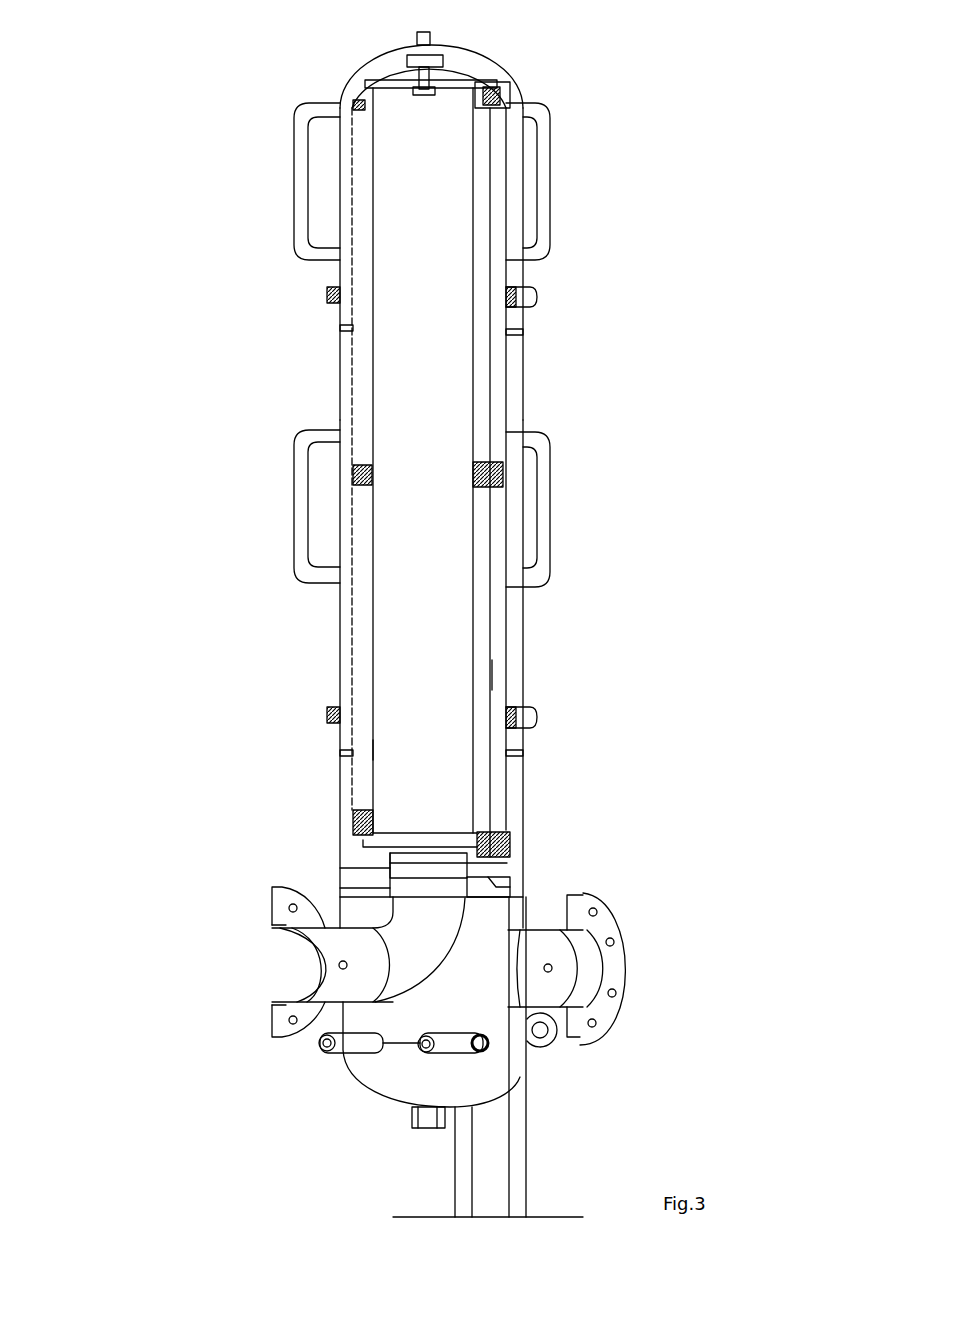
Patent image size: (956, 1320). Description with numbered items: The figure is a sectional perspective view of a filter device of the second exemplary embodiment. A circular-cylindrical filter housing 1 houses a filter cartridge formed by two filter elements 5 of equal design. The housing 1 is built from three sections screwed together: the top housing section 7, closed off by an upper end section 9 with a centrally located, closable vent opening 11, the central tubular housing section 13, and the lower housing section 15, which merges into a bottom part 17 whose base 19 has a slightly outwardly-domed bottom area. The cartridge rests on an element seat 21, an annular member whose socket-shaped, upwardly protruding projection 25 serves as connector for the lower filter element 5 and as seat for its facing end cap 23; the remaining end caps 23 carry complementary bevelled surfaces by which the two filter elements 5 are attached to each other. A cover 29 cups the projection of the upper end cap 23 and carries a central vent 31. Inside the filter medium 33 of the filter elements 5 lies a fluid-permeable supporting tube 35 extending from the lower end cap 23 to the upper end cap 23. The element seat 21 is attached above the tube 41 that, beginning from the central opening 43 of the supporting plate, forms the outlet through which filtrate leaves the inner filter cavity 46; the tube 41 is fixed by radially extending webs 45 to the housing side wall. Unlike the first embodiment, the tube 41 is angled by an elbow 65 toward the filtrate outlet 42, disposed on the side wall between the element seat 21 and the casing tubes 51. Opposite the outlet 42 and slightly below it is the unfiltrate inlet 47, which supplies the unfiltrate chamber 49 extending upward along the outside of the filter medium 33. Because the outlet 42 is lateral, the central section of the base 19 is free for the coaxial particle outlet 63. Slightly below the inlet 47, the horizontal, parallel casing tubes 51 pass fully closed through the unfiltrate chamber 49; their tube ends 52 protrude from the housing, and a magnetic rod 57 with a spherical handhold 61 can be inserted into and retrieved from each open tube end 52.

The filter housing 1 is at (255, 423).
The filter element 5 is at (352, 198).
The top housing section 7 is at (513, 220).
The upper end section 9 is at (365, 53).
The vent opening 11 is at (433, 33).
The central tubular housing section 13 is at (513, 610).
The lower housing section 15 is at (523, 832).
The bottom part 17 is at (533, 1073).
The base 19 is at (377, 1097).
The element seat 21 is at (400, 843).
The end cap 23 is at (510, 95).
The projection 25 is at (497, 90).
The cover 29 is at (500, 56).
The vent 31 is at (440, 62).
The filter medium 33 is at (482, 405).
The supporting tube 35 is at (378, 755).
The tube 41 is at (345, 893).
The filtrate outlet 42 is at (300, 968).
The central opening 43 is at (483, 857).
The webs 45 is at (520, 893).
The inner filter cavity 46 is at (492, 675).
The inlet 47 is at (622, 1003).
The unfiltrate chamber 49 is at (362, 1017).
The casing tubes 51 is at (417, 1025).
The tube ends 52 is at (555, 1040).
The magnetic rod 57 is at (450, 1053).
The spherical handhold 61 is at (578, 1032).
The particle outlet 63 is at (440, 1128).
The elbow 65 is at (453, 945).